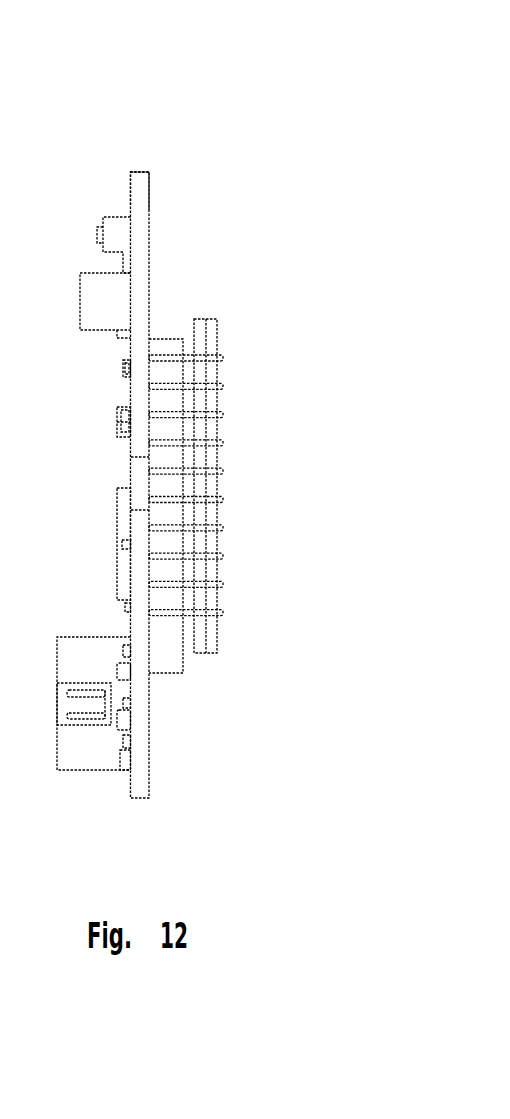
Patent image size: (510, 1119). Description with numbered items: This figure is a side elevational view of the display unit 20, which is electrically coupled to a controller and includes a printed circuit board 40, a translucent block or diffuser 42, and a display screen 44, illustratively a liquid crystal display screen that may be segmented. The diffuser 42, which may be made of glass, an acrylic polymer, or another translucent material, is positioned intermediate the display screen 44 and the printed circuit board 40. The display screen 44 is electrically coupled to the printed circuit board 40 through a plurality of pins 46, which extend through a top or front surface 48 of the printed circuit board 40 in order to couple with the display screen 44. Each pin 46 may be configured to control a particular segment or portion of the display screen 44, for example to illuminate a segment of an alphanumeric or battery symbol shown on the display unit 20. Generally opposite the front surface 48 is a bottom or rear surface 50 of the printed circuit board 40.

The display unit 20 is at (174, 122).
The printed circuit board 40 is at (140, 234).
The diffuser 42 is at (165, 662).
The display screen 44 is at (213, 633).
The pins 46 is at (223, 443).
The front surface 48 is at (149, 193).
The rear surface 50 is at (132, 185).